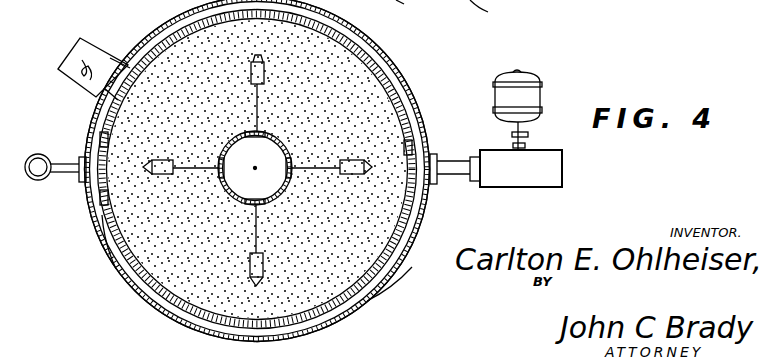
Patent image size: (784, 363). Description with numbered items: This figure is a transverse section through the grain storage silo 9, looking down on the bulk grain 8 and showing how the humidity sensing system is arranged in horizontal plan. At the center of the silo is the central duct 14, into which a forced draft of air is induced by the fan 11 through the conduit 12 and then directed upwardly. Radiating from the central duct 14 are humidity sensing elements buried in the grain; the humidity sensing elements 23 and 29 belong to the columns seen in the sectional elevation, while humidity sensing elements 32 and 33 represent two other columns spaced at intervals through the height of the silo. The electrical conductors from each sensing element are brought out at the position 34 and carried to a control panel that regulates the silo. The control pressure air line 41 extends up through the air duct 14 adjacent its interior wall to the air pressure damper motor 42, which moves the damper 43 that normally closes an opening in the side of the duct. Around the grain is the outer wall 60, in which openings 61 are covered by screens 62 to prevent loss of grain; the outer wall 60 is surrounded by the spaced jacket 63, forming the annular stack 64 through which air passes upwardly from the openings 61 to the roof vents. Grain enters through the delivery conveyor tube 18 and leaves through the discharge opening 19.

The bulk grain 8 is at (365, 83).
The grain storage silo 9 is at (420, 105).
The fan 11 is at (560, 168).
The conduit 12 is at (452, 178).
The central duct 14 is at (280, 150).
The delivery conveyor tube 18 is at (36, 182).
The discharge opening 19 is at (102, 50).
The humidity sensing element 23 is at (344, 176).
The humidity sensing element 29 is at (155, 178).
The humidity sensing element 32 is at (271, 258).
The humidity sensing element 33 is at (265, 72).
The conductor outlet position 34 is at (307, 170).
The control pressure air line 41 is at (497, 13).
The air pressure damper motor 42 is at (417, 13).
The damper 43 is at (260, 132).
The outer wall 60 is at (397, 245).
The openings 61 is at (100, 131).
The screens 62 is at (103, 208).
The spaced jacket 63 is at (372, 298).
The annular stack 64 is at (340, 311).